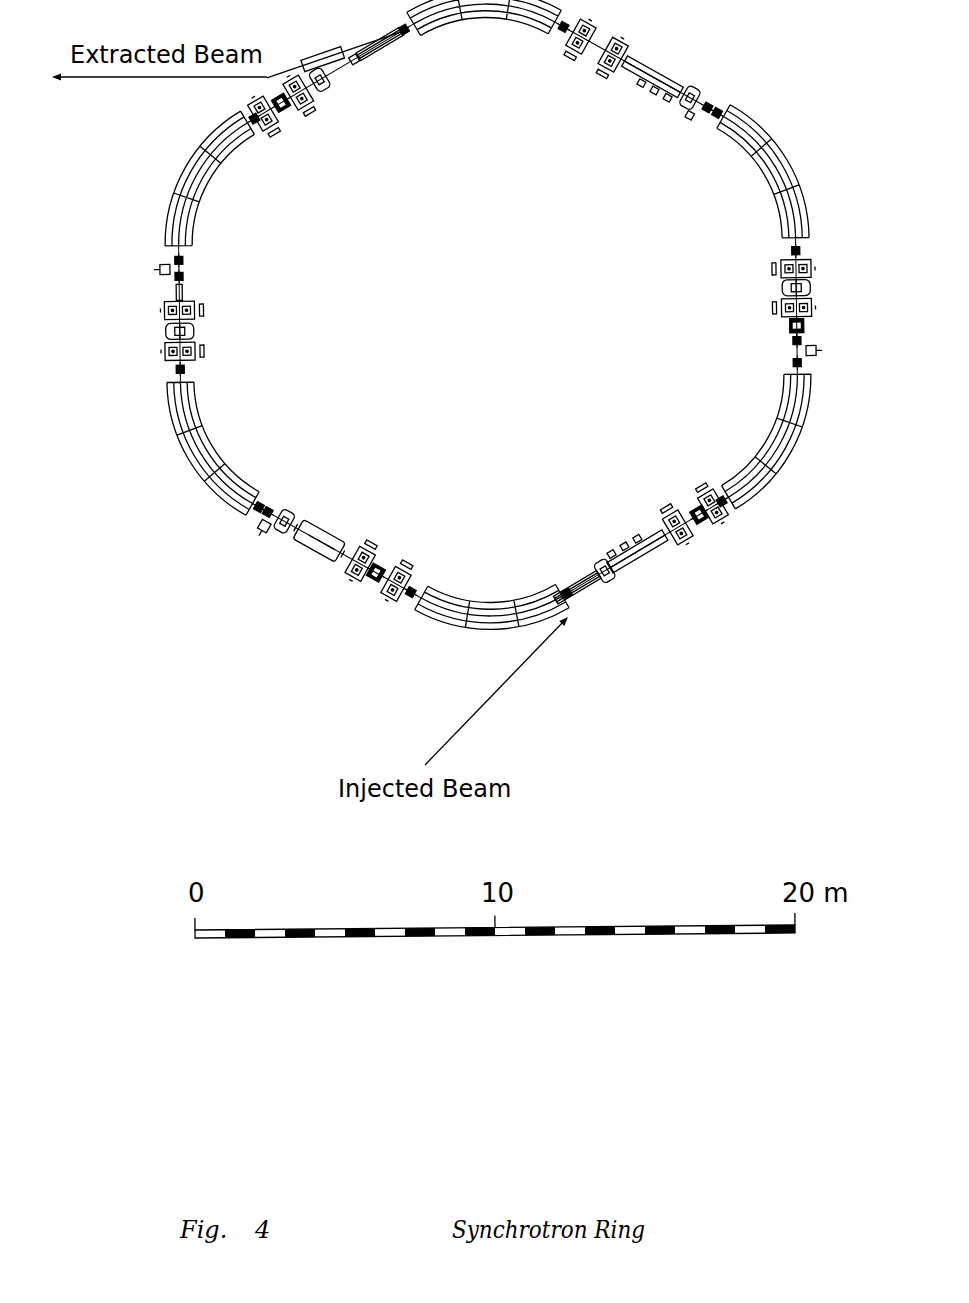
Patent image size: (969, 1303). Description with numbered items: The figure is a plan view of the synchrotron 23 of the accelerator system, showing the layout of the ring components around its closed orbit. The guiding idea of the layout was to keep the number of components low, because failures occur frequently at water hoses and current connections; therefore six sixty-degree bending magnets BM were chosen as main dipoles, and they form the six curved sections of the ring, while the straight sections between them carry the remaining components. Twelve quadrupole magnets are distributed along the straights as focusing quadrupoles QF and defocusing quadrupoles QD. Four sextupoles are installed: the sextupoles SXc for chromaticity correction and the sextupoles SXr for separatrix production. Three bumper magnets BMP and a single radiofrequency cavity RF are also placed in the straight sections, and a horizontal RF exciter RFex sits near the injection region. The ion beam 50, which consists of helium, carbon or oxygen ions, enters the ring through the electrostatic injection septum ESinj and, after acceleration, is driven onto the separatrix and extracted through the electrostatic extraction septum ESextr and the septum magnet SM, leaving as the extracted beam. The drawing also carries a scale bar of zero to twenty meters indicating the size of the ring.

The synchrotron 23 is at (190, 503).
The ion beam 50 is at (135, 79).
The bending magnet BM is at (488, 317).
The defocusing quadrupole QD is at (488, 310).
The focusing quadrupole QF is at (488, 309).
The sextupole for separatrix production SXr is at (824, 292).
The sextupole for chromaticity correction SXc is at (682, 127).
The bumper magnet BMP is at (813, 332).
The radiofrequency cavity RF is at (314, 555).
The septum magnet SM is at (374, 30).
The electrostatic septum-extraction ESextr is at (693, 38).
The electrostatic septum-injection ESinj is at (653, 574).
The RF exciter RFex is at (576, 561).